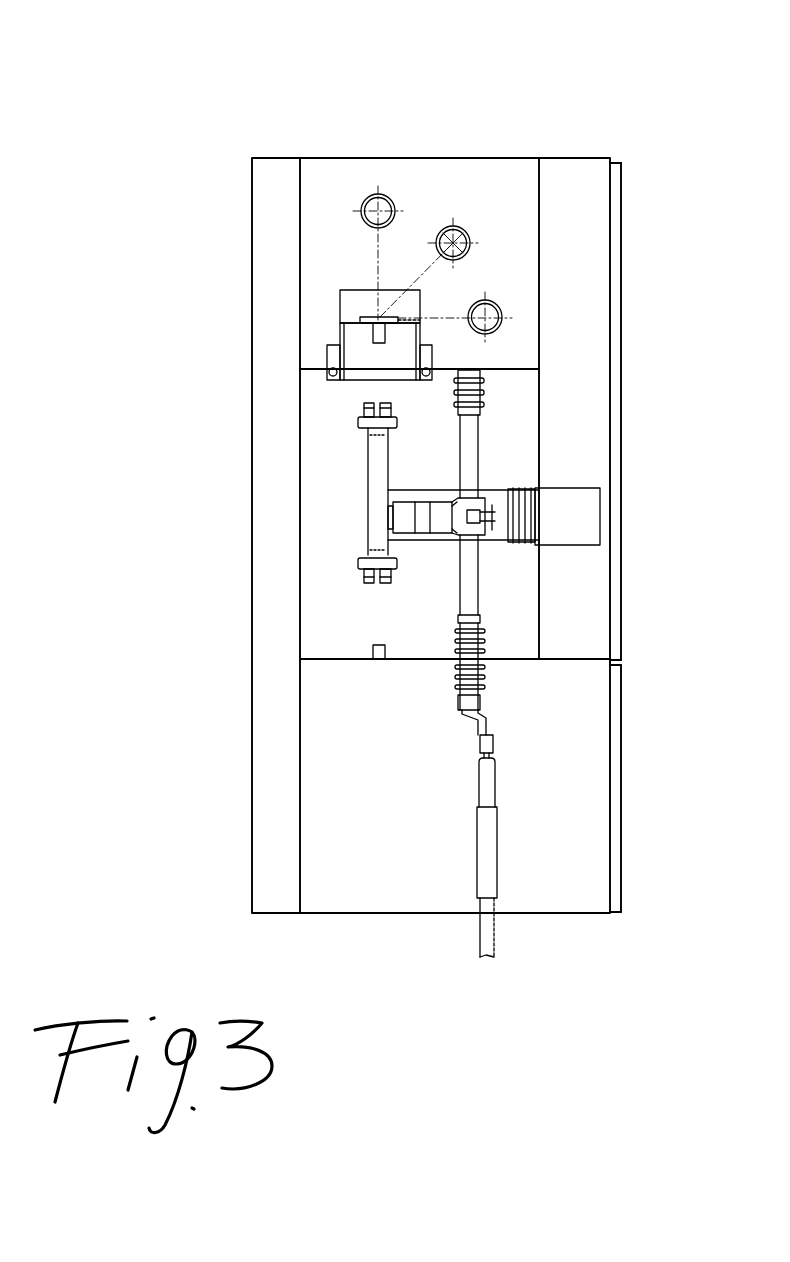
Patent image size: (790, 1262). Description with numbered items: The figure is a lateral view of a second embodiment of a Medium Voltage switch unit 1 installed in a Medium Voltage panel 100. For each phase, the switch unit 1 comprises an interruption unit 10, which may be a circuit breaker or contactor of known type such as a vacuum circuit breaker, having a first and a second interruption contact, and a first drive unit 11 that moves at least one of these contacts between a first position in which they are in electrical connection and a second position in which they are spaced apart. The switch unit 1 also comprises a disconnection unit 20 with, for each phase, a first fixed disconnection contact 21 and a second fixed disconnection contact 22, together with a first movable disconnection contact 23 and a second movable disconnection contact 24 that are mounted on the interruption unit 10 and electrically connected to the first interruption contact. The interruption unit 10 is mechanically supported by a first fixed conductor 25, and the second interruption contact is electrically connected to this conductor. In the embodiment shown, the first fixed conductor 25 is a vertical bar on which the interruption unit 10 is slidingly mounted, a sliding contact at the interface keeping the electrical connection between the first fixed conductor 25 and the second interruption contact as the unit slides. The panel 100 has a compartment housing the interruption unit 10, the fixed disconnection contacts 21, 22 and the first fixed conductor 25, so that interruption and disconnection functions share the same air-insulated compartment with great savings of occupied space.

The Medium Voltage panel 100 is at (427, 85).
The Medium Voltage switch unit 1 is at (502, 413).
The interruption unit 10 is at (488, 540).
The first drive unit 11 is at (585, 517).
The disconnection unit 20 is at (430, 623).
The first fixed disconnection contact 21 is at (372, 649).
The second fixed disconnection contact 22 is at (377, 338).
The first movable disconnection contact 23 is at (353, 577).
The second movable disconnection contact 24 is at (372, 408).
The first fixed conductor 25 is at (468, 448).